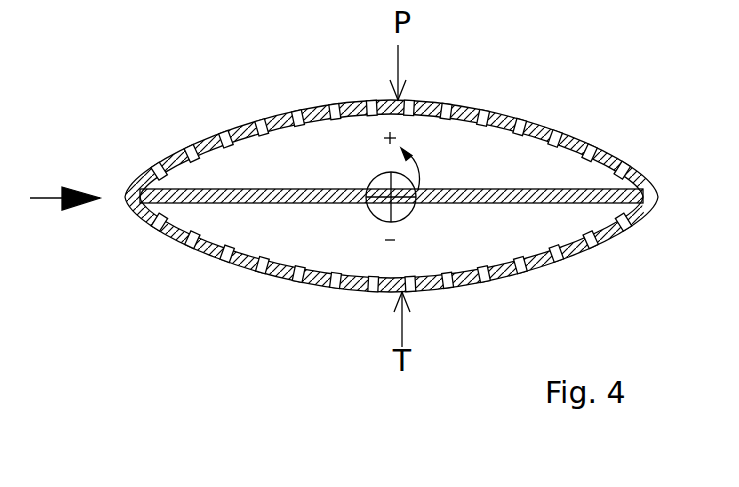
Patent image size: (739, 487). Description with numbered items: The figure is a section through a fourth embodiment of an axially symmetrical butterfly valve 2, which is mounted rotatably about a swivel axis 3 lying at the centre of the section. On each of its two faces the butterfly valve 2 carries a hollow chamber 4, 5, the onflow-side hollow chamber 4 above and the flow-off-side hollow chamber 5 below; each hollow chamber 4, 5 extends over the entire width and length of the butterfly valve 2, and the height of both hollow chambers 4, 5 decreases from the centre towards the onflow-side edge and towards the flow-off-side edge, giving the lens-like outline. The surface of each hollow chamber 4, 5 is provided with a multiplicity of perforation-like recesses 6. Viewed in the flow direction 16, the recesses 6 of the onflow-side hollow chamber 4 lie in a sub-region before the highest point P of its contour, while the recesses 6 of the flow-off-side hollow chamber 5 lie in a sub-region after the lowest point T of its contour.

The butterfly valve 2 is at (468, 187).
The swivel axis 3 is at (428, 100).
The hollow chamber 4 is at (535, 162).
The hollow chamber 5 is at (252, 246).
The recesses 6 is at (192, 145).
The flow direction 16 is at (37, 196).